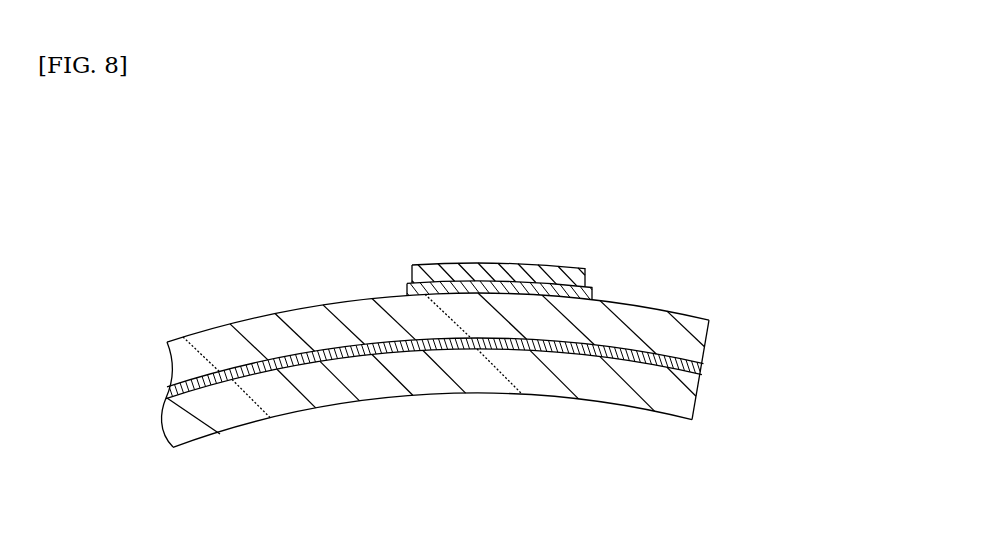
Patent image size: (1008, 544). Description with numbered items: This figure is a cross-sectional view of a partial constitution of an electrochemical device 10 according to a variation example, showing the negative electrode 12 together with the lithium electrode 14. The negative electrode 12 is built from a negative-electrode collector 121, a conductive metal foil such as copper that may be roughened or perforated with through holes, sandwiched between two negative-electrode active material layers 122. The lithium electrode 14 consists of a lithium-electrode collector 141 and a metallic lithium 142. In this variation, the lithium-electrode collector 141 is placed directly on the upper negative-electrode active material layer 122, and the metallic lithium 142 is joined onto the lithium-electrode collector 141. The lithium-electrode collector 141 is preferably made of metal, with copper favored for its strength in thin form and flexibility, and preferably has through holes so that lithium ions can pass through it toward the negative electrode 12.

The display device 10 is at (778, 159).
The negative electrode 12 is at (837, 322).
The negative-electrode collector 121 is at (683, 362).
The negative-electrode active material layer 122 is at (677, 338).
The lithium electrode 14 is at (430, 152).
The lithium-electrode collector 141 is at (500, 263).
The metallic lithium 142 is at (476, 293).